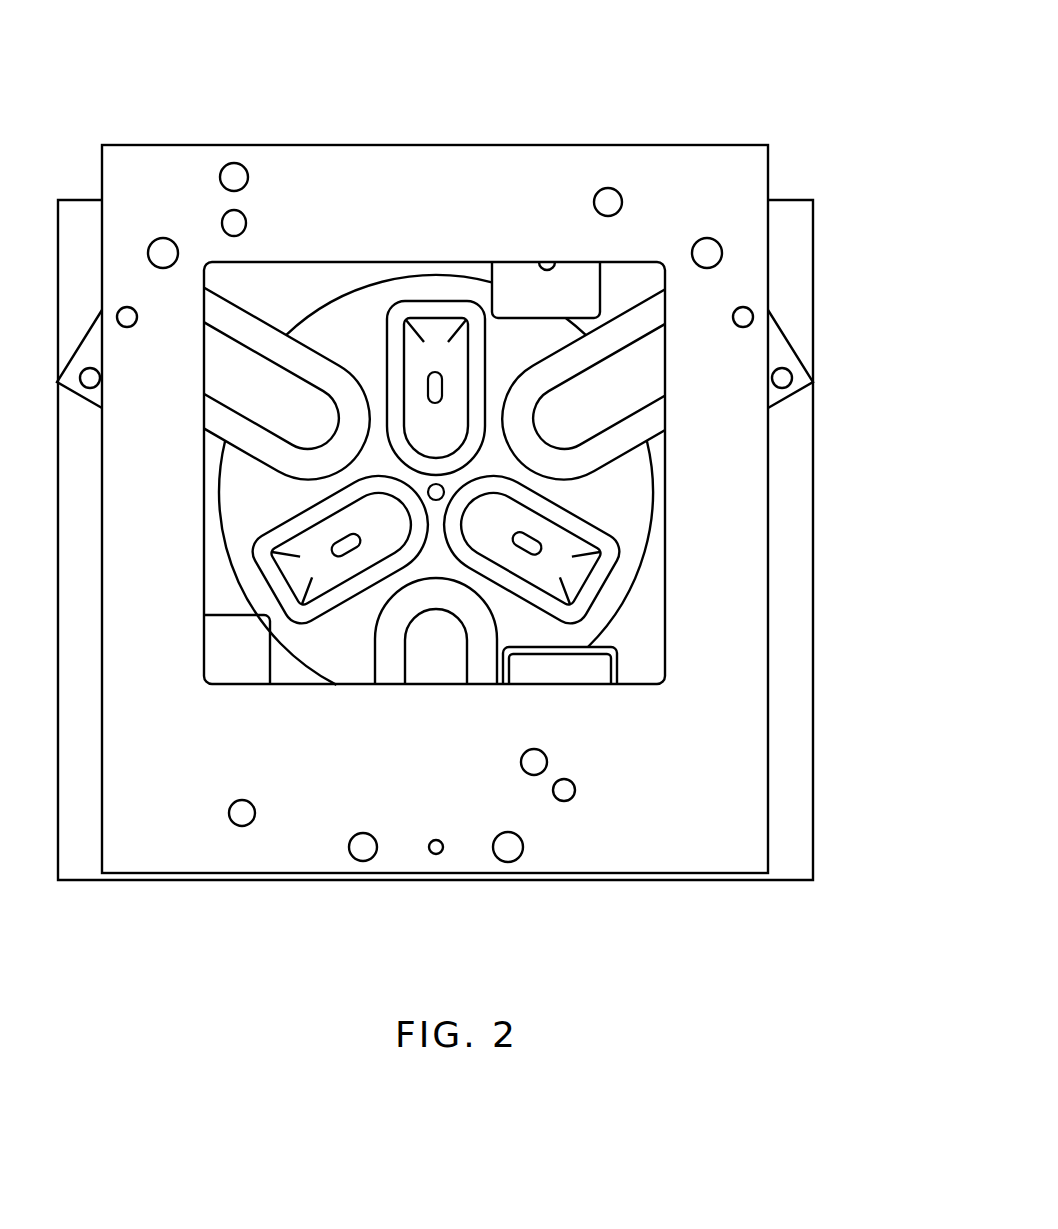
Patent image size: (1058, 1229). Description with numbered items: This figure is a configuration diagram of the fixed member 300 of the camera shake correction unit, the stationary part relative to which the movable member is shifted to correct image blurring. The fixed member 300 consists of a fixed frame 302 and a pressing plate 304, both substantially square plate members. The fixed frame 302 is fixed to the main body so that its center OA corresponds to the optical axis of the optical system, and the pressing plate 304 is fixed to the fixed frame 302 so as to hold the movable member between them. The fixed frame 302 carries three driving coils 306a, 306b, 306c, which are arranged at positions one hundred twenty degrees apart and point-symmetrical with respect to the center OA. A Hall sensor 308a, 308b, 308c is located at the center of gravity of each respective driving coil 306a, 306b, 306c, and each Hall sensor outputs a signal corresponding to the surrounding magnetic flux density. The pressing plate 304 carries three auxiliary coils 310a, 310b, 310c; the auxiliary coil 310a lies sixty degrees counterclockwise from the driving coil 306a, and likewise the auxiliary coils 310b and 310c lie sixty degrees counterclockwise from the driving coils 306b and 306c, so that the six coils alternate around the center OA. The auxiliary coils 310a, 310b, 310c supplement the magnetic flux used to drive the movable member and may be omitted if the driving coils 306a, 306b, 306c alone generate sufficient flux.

The fixed member 300 is at (818, 69).
The fixed frame 302 is at (813, 271).
The pressing plate 304 is at (585, 145).
The driving coil 306a is at (455, 300).
The driving coil 306b is at (352, 598).
The driving coil 306c is at (578, 532).
The Hall sensor 308a is at (437, 372).
The Hall sensor 308b is at (343, 556).
The Hall sensor 308c is at (530, 548).
The auxiliary coil 310a is at (263, 340).
The auxiliary coil 310b is at (483, 625).
The auxiliary coil 310c is at (652, 424).
The center OA is at (444, 492).